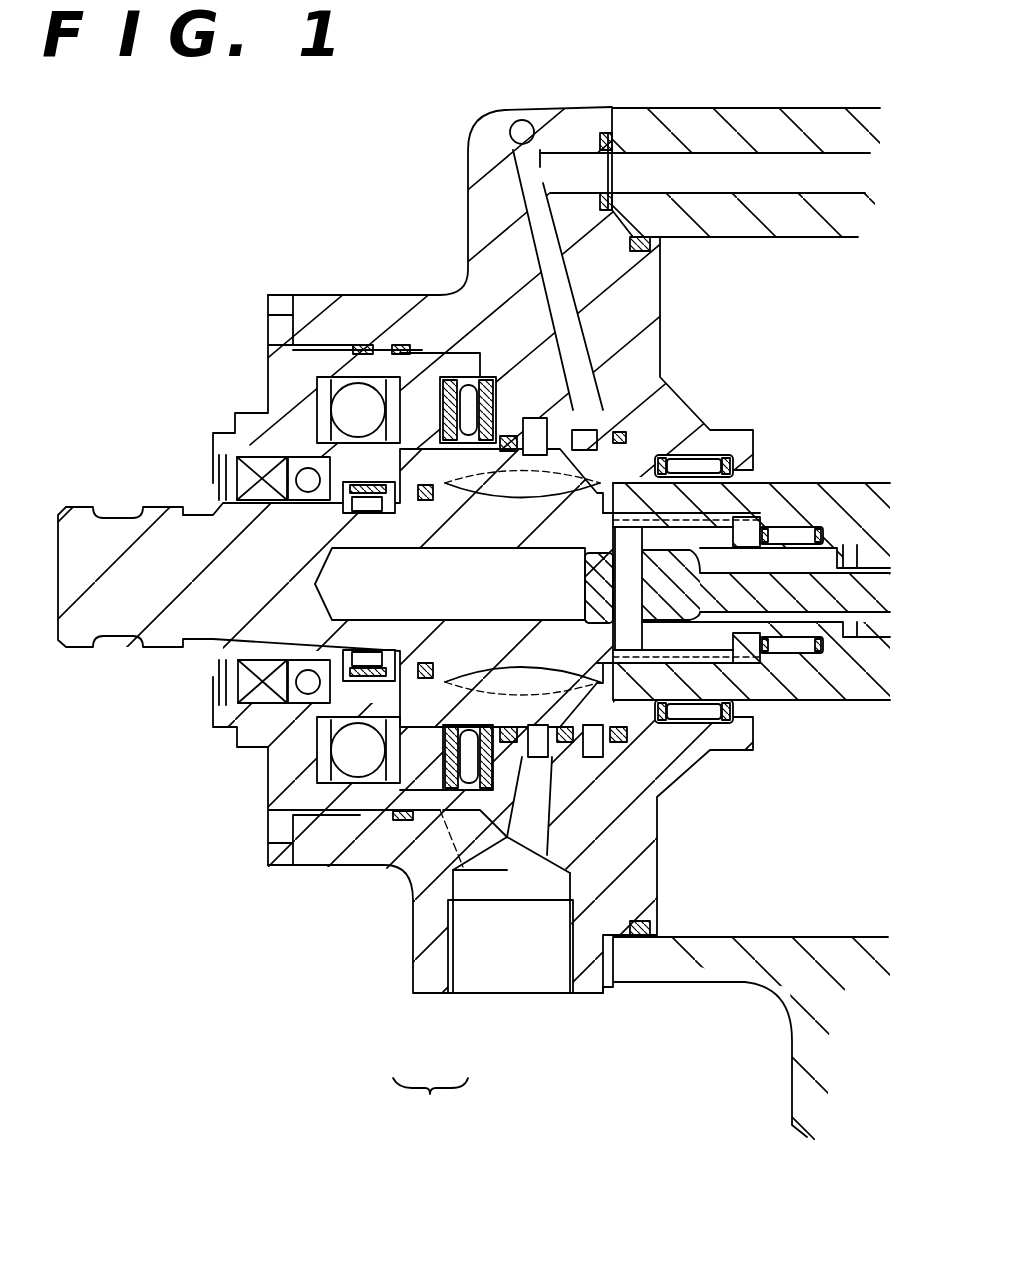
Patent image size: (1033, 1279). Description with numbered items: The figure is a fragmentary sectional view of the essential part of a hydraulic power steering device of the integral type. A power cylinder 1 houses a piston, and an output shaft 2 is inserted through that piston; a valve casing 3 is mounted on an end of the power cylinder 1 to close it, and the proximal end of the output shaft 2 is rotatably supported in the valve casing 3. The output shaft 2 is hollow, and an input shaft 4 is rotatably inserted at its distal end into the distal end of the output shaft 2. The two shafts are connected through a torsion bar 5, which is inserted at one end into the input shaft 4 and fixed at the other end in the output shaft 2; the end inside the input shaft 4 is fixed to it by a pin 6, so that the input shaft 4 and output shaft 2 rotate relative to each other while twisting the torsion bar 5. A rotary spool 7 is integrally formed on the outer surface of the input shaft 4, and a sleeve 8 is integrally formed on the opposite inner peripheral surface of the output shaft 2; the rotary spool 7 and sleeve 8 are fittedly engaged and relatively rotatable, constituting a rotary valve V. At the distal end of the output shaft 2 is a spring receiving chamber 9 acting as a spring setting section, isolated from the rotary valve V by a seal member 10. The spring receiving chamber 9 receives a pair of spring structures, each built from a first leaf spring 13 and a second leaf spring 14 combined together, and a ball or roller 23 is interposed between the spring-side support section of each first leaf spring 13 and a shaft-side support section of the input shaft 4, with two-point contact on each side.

The power cylinder 1 is at (753, 122).
The output shaft 2 is at (822, 690).
The valve casing 3 is at (408, 307).
The input shaft 4 is at (105, 548).
The torsion bar 5 is at (780, 590).
The pin 6 is at (585, 583).
The rotary spool 7 is at (452, 655).
The sleeve 8 is at (538, 713).
The spring receiving chamber 9 is at (373, 700).
The seal member 10 is at (425, 660).
The first leaf spring 13 is at (358, 657).
The second leaf spring 14 is at (367, 500).
The ball or roller 23 is at (405, 581).
The rotary valve V is at (430, 1107).